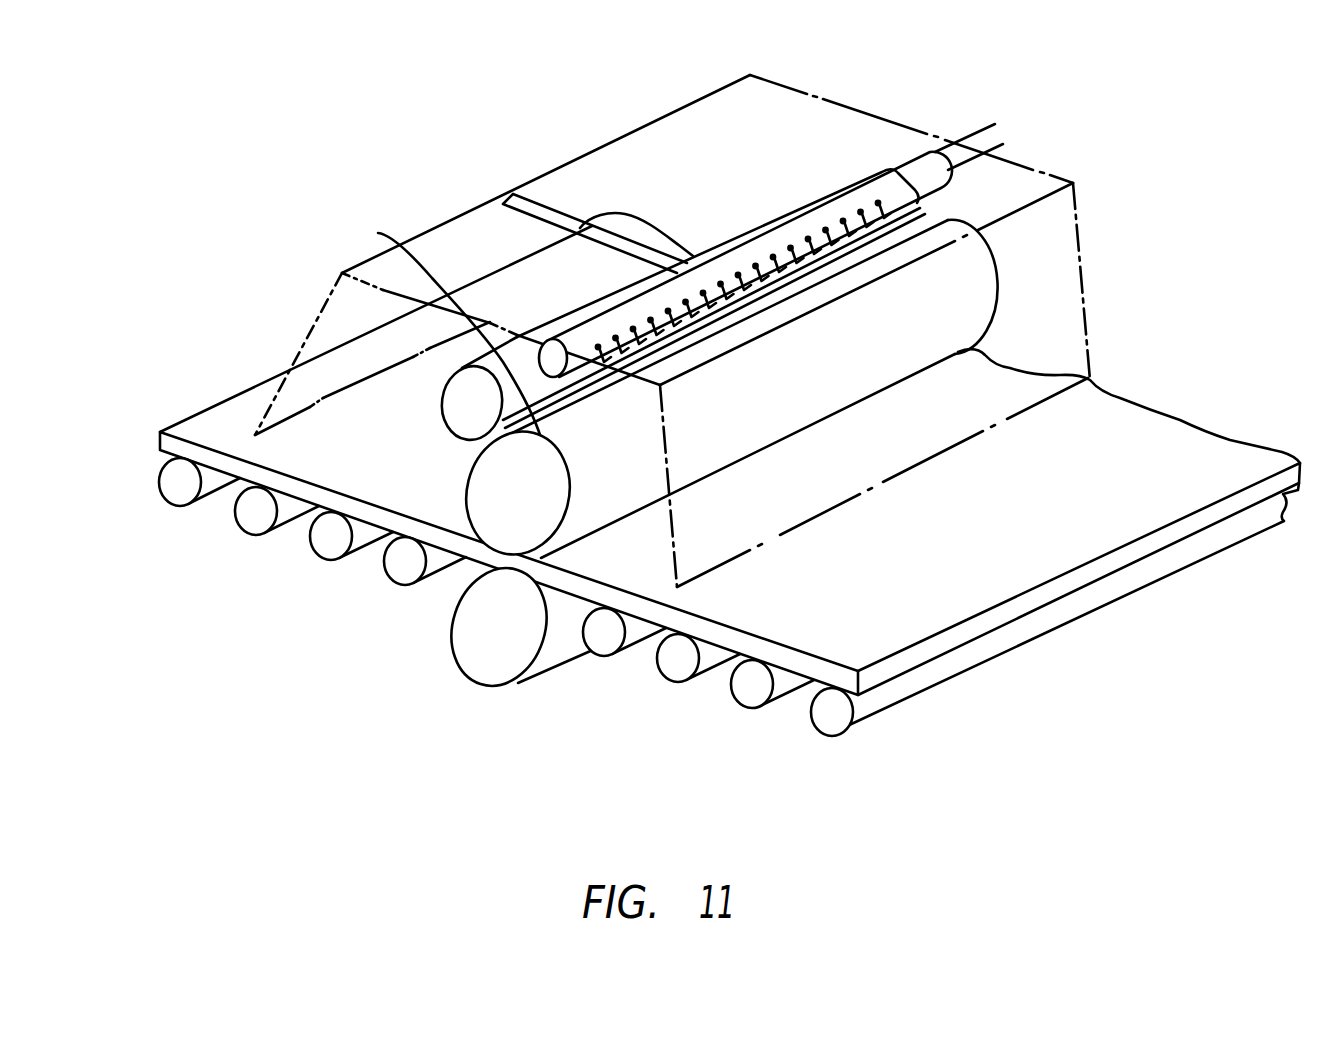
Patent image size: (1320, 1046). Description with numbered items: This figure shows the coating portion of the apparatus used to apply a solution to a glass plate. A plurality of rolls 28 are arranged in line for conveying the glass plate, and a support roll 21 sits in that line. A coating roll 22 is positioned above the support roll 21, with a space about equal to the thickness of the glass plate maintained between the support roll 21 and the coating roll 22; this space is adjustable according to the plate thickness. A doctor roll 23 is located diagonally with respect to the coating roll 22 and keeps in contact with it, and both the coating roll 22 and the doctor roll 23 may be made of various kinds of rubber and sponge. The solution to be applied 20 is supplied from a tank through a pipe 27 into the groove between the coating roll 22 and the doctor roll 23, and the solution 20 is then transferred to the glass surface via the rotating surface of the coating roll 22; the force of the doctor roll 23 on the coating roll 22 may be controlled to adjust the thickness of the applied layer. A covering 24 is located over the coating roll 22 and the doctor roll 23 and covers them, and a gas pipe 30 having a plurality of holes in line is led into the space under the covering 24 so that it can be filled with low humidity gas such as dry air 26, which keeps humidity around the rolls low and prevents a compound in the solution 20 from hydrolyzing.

The solution to be applied 20 is at (507, 203).
The support roll 21 is at (495, 665).
The coating roll 22 is at (493, 508).
The doctor roll 23 is at (465, 414).
The covering 24 is at (307, 335).
The dry air 26 is at (1000, 137).
The pipe 27 is at (573, 227).
The rolls 28 is at (250, 508).
The gas pipe 30 is at (921, 174).